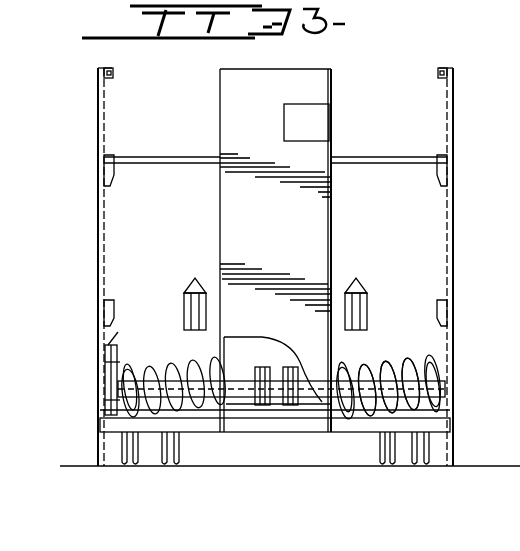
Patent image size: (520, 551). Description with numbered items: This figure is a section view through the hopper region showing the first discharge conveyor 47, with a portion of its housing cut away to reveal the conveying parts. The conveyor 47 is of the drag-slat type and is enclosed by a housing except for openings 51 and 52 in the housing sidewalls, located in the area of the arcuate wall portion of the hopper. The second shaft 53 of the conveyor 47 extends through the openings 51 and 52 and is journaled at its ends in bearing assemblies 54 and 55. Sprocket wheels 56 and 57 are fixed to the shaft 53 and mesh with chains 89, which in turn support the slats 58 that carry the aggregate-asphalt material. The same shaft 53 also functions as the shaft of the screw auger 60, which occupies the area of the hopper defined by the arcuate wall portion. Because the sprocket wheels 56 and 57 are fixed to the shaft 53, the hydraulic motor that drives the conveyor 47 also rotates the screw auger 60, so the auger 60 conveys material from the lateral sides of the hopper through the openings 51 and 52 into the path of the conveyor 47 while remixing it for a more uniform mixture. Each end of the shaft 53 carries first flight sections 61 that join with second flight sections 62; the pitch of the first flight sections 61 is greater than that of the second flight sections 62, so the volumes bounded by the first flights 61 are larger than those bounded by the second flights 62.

The first discharge conveyor 47 is at (345, 95).
The opening 51 is at (226, 405).
The opening 52 is at (342, 410).
The second shaft 53 is at (248, 402).
The bearing assembly 54 is at (110, 380).
The bearing assembly 55 is at (445, 373).
The sprocket wheel 56 is at (259, 405).
The sprocket wheel 57 is at (293, 405).
The slats 58 is at (280, 406).
The screw auger 60 is at (396, 352).
The first flight sections 61 is at (197, 365).
The second flight sections 62 is at (137, 352).
The chains 89 is at (305, 405).